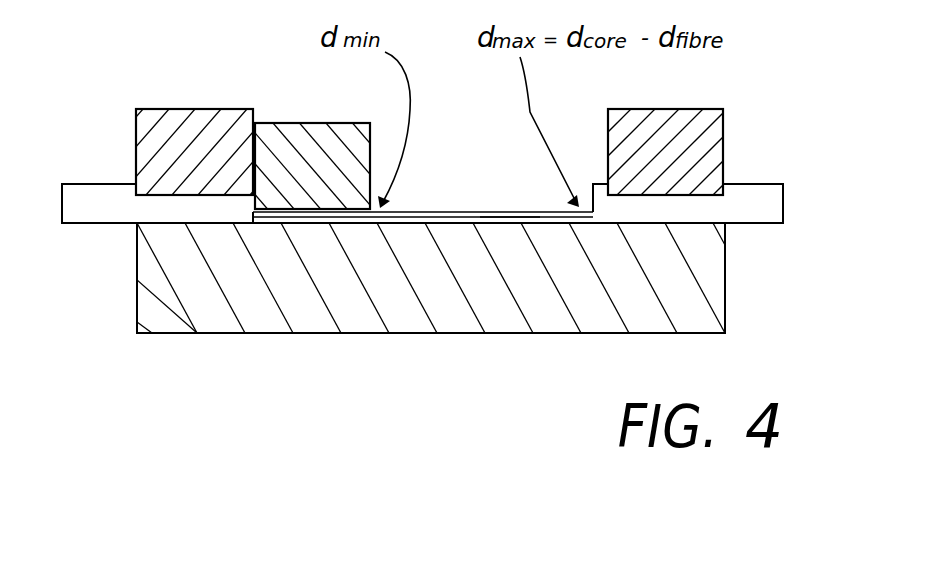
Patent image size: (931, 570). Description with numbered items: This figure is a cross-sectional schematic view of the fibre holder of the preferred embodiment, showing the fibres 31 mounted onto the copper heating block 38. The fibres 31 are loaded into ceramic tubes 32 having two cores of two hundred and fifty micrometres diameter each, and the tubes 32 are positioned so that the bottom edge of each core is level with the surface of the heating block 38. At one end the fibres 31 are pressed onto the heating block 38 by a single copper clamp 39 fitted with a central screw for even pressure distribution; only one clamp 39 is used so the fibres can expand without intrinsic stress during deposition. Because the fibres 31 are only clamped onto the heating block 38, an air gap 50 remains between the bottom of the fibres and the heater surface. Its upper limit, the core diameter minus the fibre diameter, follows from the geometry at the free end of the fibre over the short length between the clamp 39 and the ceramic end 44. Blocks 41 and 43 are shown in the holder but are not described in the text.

The fibre 31 is at (450, 212).
The ceramic tube 32 is at (82, 192).
The copper heating block 38 is at (215, 319).
The copper clamp 39 is at (308, 130).
The clamping block 41 is at (165, 115).
The clamping block 43 is at (710, 132).
The ceramic end 44 is at (594, 186).
The air gap 50 is at (513, 214).